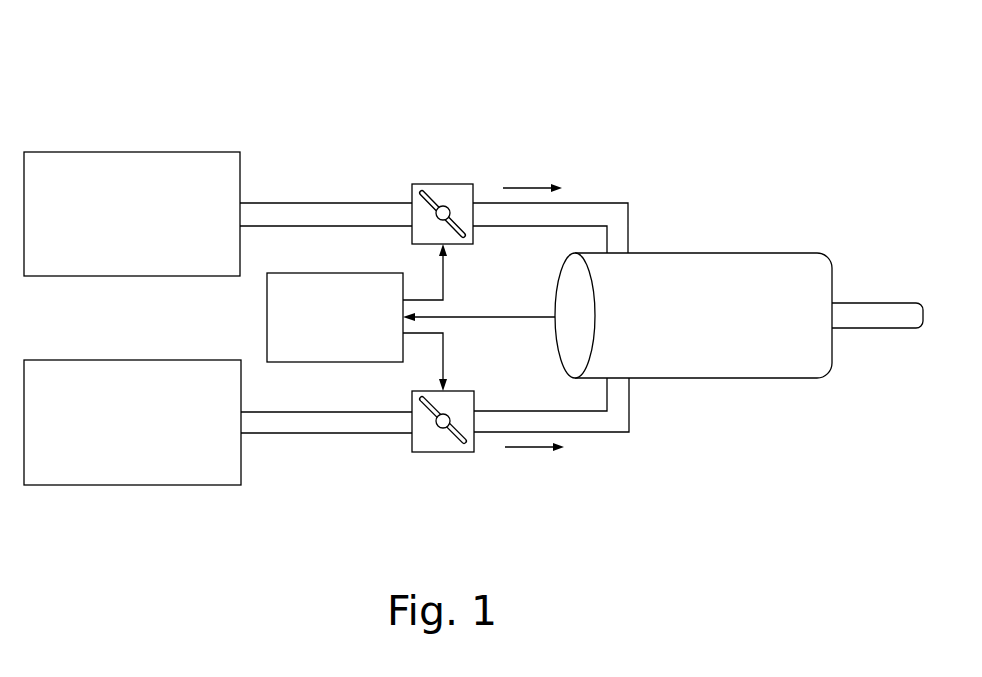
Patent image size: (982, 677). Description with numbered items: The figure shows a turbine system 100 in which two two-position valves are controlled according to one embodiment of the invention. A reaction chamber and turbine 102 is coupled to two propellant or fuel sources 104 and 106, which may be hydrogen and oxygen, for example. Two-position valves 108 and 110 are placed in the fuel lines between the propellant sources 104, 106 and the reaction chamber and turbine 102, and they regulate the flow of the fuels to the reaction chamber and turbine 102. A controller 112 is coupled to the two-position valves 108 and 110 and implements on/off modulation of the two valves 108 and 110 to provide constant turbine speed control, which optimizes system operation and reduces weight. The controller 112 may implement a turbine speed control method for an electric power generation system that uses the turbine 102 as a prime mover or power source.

The turbine system 100 is at (605, 84).
The reaction chamber and turbine 102 is at (740, 253).
The propellant source 104 is at (137, 152).
The propellant source 106 is at (180, 485).
The two-position valve 108 is at (430, 184).
The two-position valve 110 is at (445, 452).
The controller 112 is at (267, 335).